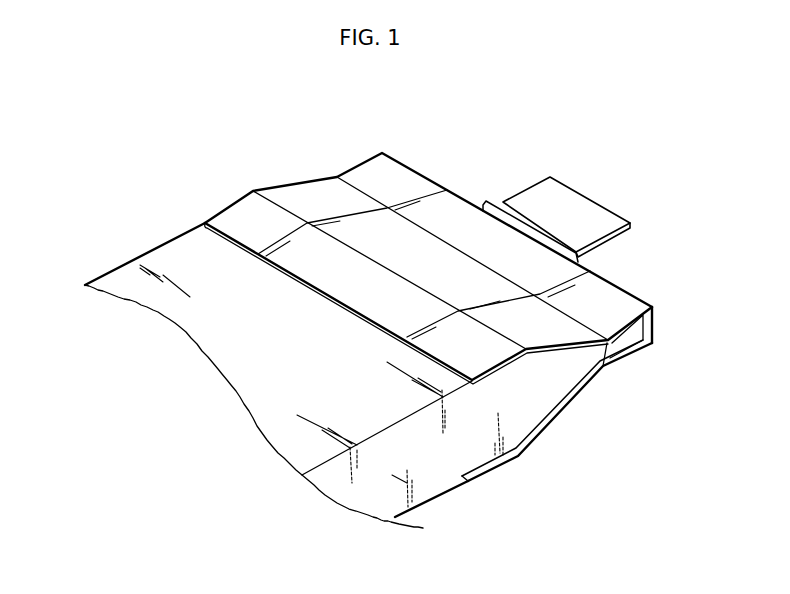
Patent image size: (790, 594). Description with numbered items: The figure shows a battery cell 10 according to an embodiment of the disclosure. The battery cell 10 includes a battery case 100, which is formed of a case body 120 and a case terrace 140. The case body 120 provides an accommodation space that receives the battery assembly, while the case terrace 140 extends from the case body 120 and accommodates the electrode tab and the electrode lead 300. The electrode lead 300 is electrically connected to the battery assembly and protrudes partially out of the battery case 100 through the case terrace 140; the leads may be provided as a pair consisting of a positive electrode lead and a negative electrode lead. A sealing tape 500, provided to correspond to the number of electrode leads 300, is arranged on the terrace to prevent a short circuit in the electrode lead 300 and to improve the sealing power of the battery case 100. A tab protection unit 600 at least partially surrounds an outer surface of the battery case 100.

The battery cell 10 is at (380, 328).
The battery case 100 is at (380, 399).
The case body 120 is at (428, 484).
The case terrace 140 is at (569, 394).
The electrode lead 300 is at (558, 188).
The sealing tape 500 is at (486, 203).
The tab protection unit 600 is at (428, 255).